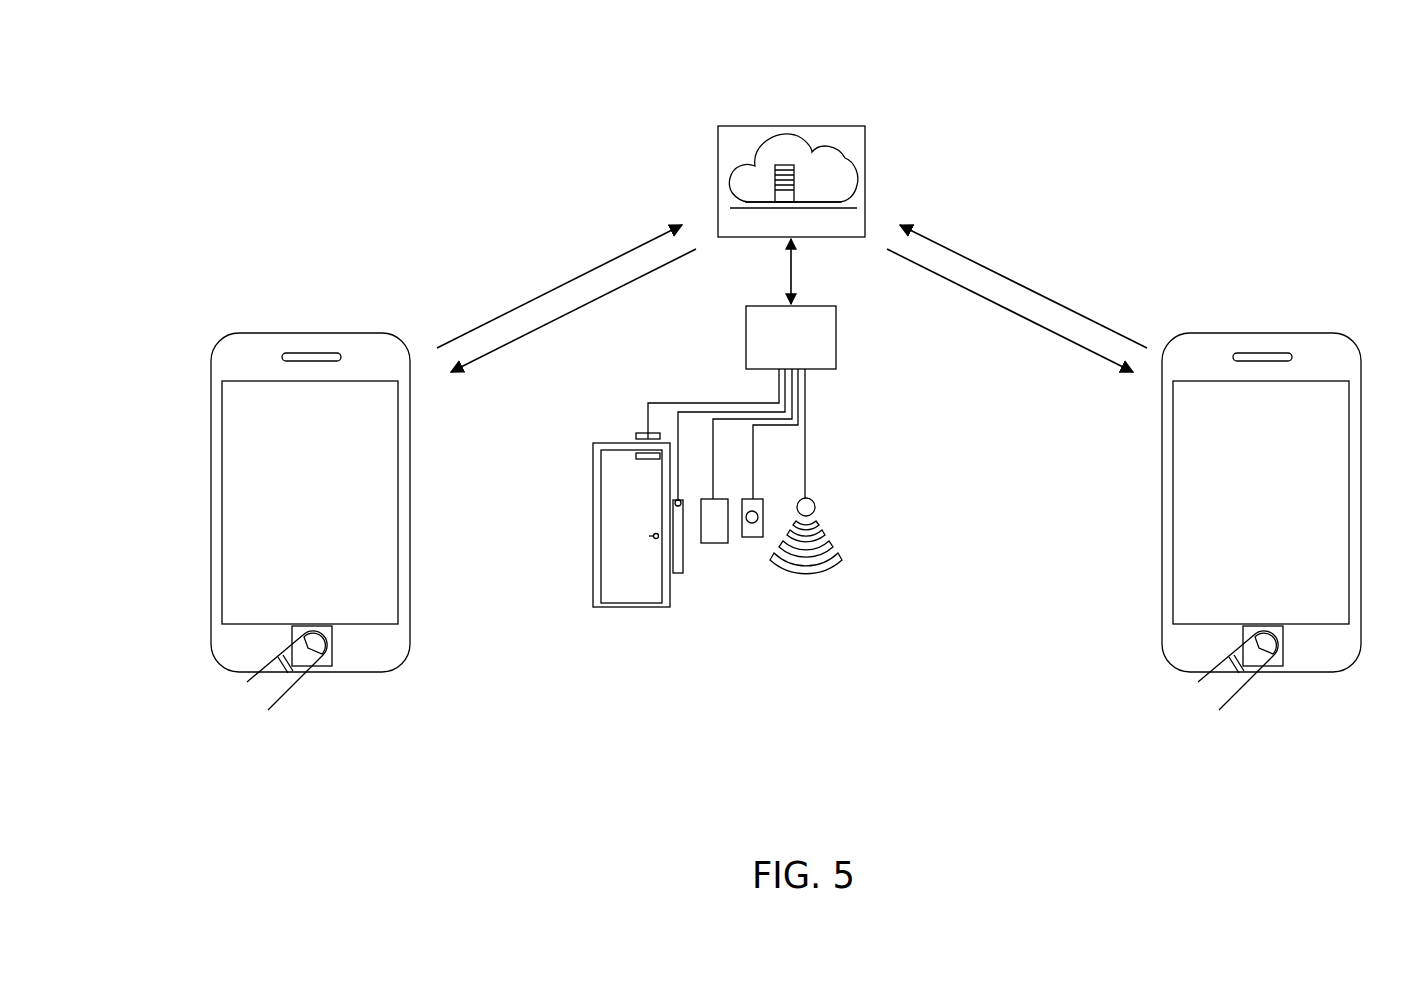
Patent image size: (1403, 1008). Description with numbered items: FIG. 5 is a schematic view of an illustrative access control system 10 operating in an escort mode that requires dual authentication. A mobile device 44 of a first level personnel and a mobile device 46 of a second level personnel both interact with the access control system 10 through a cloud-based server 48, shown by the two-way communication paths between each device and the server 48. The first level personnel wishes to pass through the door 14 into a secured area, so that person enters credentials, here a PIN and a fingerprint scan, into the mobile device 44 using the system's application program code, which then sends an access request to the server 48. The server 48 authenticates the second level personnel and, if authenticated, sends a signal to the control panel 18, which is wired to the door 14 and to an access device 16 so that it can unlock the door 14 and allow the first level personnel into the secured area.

The access control system 10 is at (1137, 86).
The door 14 is at (609, 533).
The access device 16 is at (840, 576).
The control panel 18 is at (746, 337).
The mobile device 44 is at (276, 521).
The mobile device 46 is at (1227, 521).
The server 48 is at (792, 126).